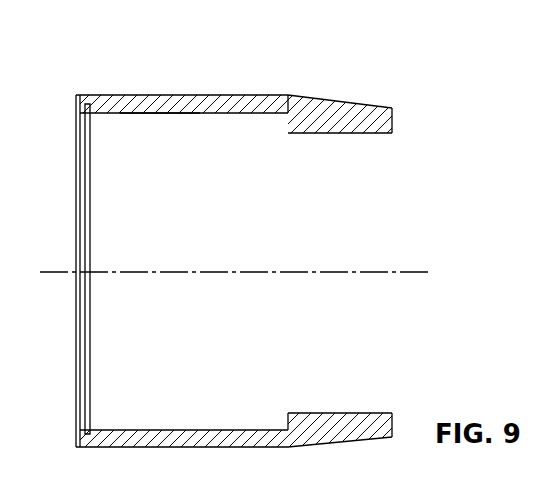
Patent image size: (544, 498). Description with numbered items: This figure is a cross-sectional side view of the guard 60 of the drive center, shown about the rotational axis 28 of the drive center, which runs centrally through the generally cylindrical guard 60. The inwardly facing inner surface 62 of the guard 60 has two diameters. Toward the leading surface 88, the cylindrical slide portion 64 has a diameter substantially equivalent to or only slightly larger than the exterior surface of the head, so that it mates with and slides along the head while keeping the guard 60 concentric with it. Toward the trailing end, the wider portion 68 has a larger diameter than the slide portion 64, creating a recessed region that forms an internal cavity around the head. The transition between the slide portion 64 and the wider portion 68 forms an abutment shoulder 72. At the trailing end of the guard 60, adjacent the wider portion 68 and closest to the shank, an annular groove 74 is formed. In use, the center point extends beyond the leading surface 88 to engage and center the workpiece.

The rotational axis 28 is at (421, 272).
The guard 60 is at (272, 238).
The inner surface 62 is at (125, 112).
The cylindrical slide portion 64 is at (371, 134).
The wider portion 68 is at (159, 112).
The abutment shoulder 72 is at (293, 117).
The annular groove 74 is at (85, 104).
The leading surface 88 is at (395, 384).